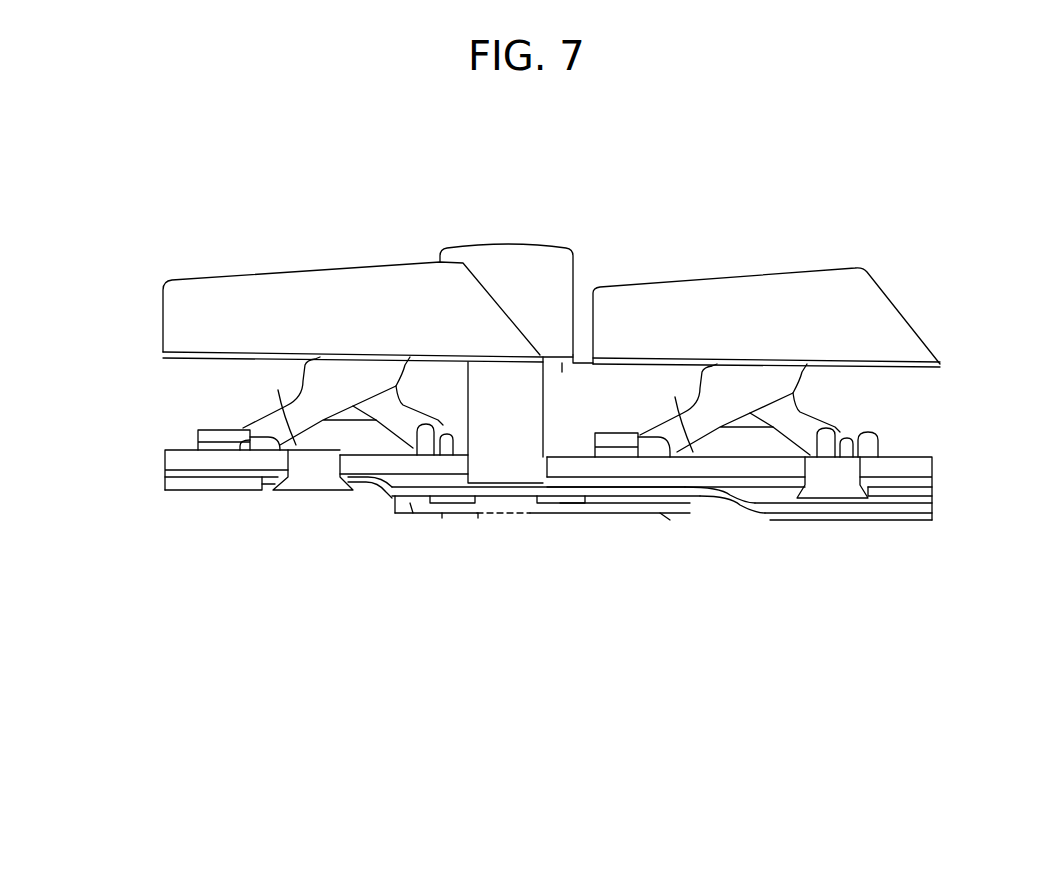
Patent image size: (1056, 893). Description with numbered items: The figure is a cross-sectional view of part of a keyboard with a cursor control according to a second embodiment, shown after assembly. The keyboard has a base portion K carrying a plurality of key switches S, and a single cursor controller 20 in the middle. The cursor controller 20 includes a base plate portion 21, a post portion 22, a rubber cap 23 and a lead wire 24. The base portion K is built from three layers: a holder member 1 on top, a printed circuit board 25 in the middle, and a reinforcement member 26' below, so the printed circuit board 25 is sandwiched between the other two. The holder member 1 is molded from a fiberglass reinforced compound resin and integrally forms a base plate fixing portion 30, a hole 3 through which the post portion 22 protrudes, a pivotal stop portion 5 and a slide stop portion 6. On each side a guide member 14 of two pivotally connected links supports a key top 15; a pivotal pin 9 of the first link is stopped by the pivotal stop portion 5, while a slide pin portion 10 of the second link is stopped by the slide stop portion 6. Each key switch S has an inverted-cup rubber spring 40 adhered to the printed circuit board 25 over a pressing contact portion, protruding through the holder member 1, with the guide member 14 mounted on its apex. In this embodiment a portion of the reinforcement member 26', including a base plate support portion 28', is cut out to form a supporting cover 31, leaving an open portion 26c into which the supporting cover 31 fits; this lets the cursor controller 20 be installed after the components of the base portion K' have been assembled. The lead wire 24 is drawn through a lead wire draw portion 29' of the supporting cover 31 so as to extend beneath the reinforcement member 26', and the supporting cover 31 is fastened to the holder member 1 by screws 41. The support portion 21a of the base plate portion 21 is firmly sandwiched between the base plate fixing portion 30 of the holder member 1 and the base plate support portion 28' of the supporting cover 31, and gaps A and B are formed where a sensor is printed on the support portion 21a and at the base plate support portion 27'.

The holder member 1 is at (165, 462).
The hole 3 is at (545, 468).
The pivotal stop portion 5 is at (871, 447).
The slide stop portion 6 is at (200, 430).
The pivotal pin 9 is at (445, 436).
The slide pin portion 10 is at (253, 447).
The guide member 14 is at (403, 398).
The key top 15 is at (279, 292).
The cursor controller 20 is at (549, 413).
The base plate portion 21 is at (592, 503).
The support portion 21a is at (394, 498).
The post portion 22 is at (532, 386).
The rubber cap 23 is at (518, 246).
The lead wire 24 is at (912, 521).
The printed circuit board 25 is at (165, 476).
The reinforcement member 26' is at (544, 510).
The open portion 26c is at (266, 488).
The base plate support portion 27' is at (516, 544).
The base plate support portion 28' is at (418, 534).
The lead wire draw portion 29' is at (721, 542).
The base plate fixing portion 30 is at (392, 497).
The supporting cover 31 is at (668, 520).
The rubber spring 40 is at (285, 437).
The screws 41 is at (302, 482).
The gap A is at (442, 514).
The gap B is at (478, 514).
The base portion K is at (57, 489).
The base portion K' is at (1016, 489).
The key switch S is at (900, 291).